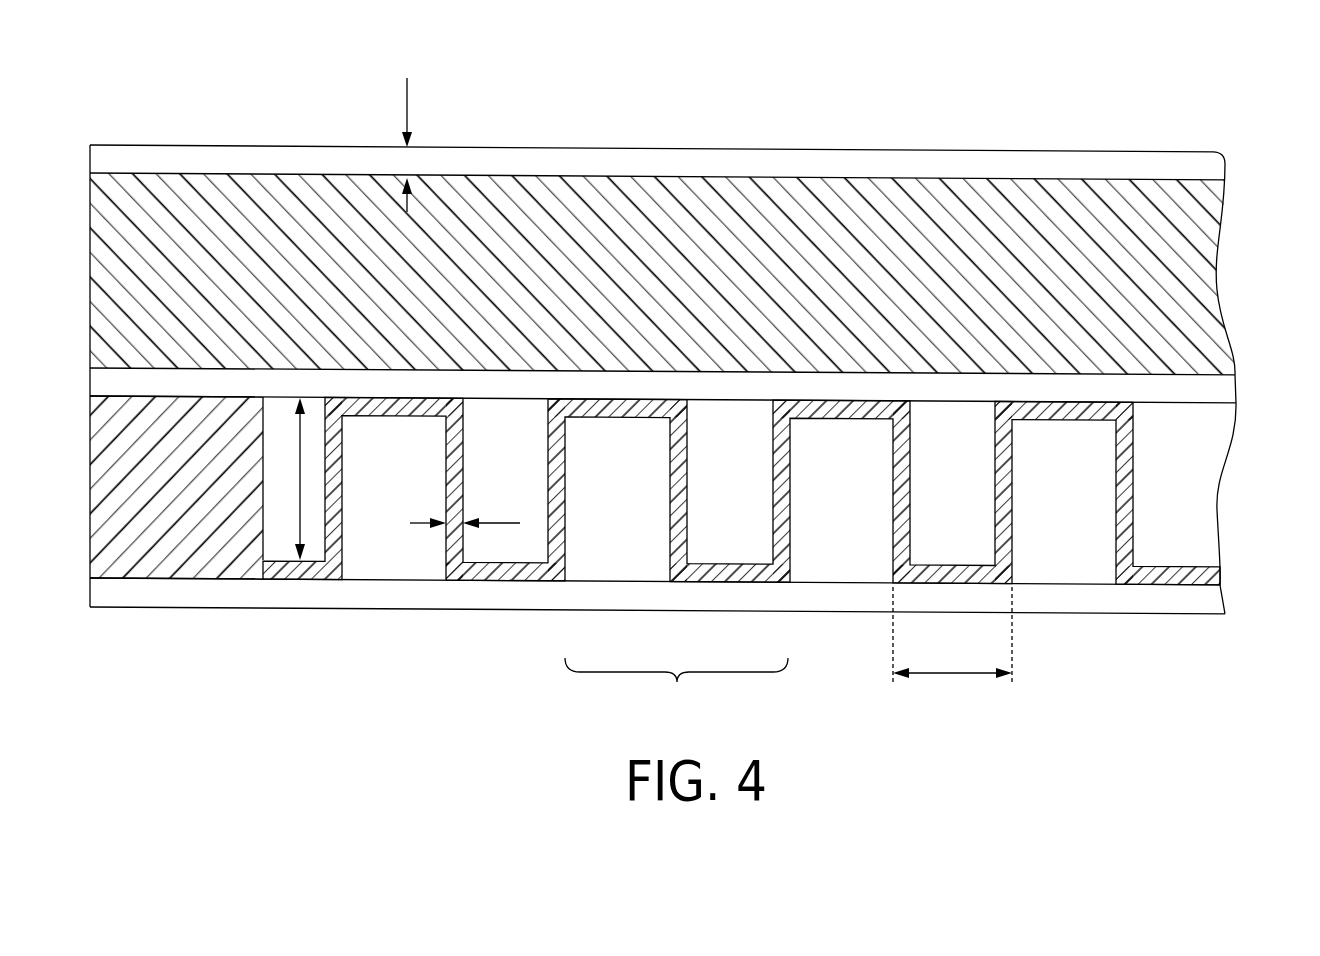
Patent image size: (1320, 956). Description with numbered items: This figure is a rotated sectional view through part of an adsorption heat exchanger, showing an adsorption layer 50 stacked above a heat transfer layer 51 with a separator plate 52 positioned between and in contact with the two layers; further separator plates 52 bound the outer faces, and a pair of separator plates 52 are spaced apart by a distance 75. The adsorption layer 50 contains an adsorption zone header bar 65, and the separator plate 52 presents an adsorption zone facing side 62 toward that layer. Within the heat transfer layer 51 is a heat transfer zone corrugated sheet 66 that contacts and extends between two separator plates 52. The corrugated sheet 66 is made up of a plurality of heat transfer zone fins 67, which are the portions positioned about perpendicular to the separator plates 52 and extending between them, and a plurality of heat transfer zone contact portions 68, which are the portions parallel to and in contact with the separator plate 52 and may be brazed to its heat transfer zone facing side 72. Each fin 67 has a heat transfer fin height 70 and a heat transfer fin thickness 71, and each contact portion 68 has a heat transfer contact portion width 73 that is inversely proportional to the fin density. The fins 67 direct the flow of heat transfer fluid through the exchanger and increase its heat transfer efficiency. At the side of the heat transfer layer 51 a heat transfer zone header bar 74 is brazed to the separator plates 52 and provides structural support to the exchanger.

The adsorption layer 50 is at (703, 240).
The heat transfer layer 51 is at (789, 526).
The separator plate 52 is at (1189, 138).
The adsorption zone facing side 62 is at (170, 175).
The adsorption zone header bar 65 is at (624, 218).
The heat transfer zone corrugated sheet 66 is at (676, 689).
The heat transfer zone fin 67 is at (565, 480).
The heat transfer zone contact portion 68 is at (722, 572).
The heat transfer fin height 70 is at (298, 478).
The heat transfer fin thickness 71 is at (505, 523).
The heat transfer zone facing side 72 is at (233, 400).
The heat transfer contact portion width 73 is at (956, 680).
The heat transfer zone header bar 74 is at (100, 490).
The distance 75 is at (407, 102).